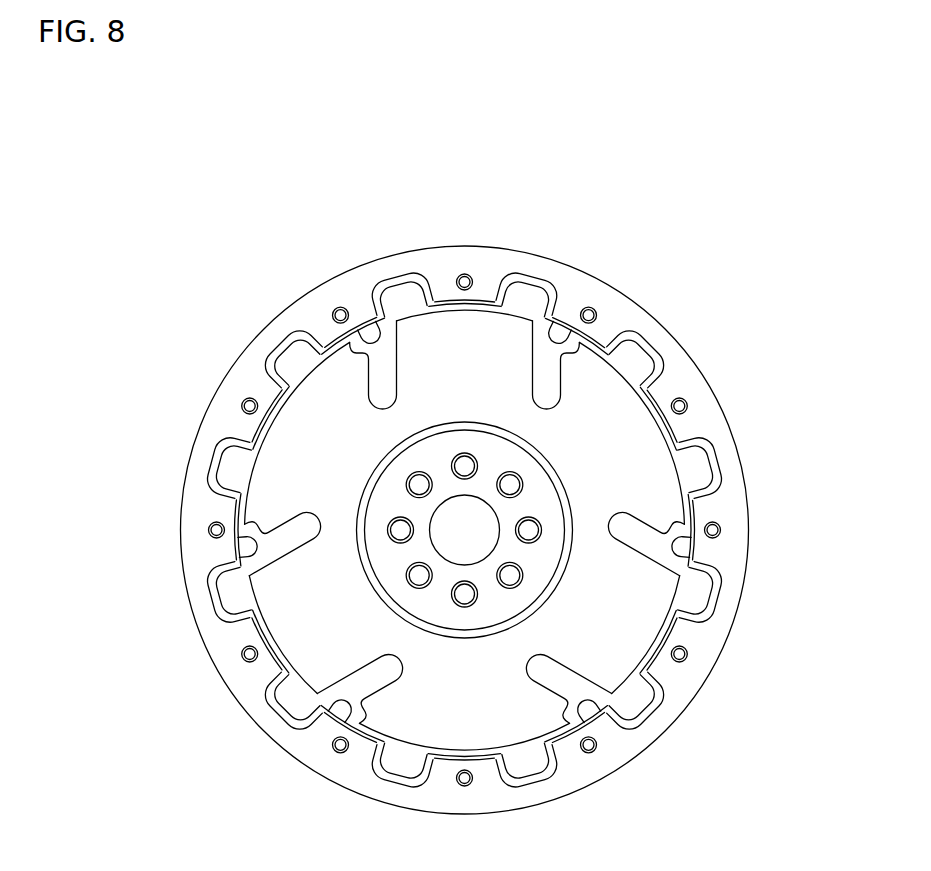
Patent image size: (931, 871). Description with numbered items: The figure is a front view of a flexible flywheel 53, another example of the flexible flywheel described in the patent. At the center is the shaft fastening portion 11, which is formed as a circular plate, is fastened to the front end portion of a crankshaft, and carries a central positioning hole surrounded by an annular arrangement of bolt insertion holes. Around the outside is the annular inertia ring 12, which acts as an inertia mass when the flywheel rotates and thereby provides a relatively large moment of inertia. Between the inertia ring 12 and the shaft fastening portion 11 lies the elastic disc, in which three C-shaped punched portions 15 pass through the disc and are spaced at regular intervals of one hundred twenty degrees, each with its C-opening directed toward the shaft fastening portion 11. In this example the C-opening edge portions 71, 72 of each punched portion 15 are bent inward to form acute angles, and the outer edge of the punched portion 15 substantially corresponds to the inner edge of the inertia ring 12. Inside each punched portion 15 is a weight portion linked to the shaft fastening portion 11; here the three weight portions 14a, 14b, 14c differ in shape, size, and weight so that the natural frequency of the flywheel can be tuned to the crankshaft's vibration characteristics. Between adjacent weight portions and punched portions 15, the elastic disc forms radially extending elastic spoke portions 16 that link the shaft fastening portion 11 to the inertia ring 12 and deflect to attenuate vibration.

The flexible flywheel 53 is at (784, 300).
The inertia ring 12 is at (254, 343).
The weight portion 14a is at (627, 422).
The weight portion 14b is at (466, 700).
The weight portion 14c is at (277, 433).
The punched portion 15 is at (371, 338).
The elastic spoke portion 16 is at (557, 336).
The C-opening edge portion 71 is at (399, 378).
The C-opening edge portion 72 is at (526, 378).
The shaft fastening portion 11 is at (548, 497).